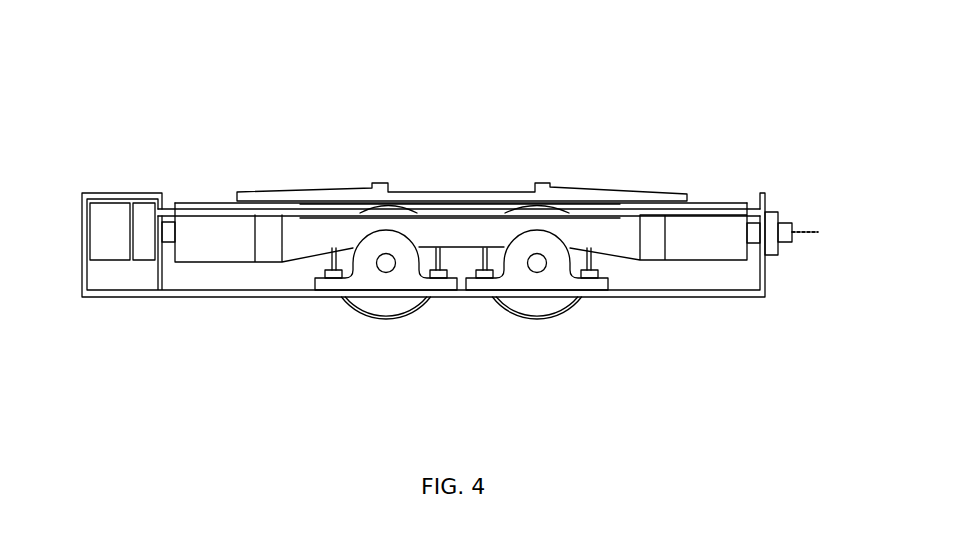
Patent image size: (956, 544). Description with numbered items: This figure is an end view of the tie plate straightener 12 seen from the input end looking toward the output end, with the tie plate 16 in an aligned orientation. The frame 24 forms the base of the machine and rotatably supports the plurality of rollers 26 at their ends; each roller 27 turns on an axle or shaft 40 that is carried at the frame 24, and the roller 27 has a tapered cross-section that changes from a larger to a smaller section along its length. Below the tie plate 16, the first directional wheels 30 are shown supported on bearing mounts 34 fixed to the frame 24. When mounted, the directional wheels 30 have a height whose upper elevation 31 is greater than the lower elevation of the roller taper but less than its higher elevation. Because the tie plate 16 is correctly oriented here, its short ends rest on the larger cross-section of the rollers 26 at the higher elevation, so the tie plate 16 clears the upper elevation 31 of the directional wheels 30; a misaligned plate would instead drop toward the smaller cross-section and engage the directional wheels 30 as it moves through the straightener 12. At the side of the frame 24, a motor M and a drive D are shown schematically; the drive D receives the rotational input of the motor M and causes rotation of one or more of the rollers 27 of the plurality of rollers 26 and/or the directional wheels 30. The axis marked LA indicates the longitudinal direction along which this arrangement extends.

The tie plate straightener 12 is at (528, 80).
The tie plate 16 is at (565, 189).
The frame 24 is at (750, 300).
The plurality of rollers 26 is at (700, 165).
The roller 27 is at (712, 250).
The first directional wheels 30 is at (373, 317).
The upper elevation 31 is at (468, 204).
The bearing mounts 34 is at (410, 280).
The axle or shaft 40 is at (758, 193).
The motor M is at (110, 212).
The drive D is at (142, 210).
The longitudinal axis LA is at (822, 236).